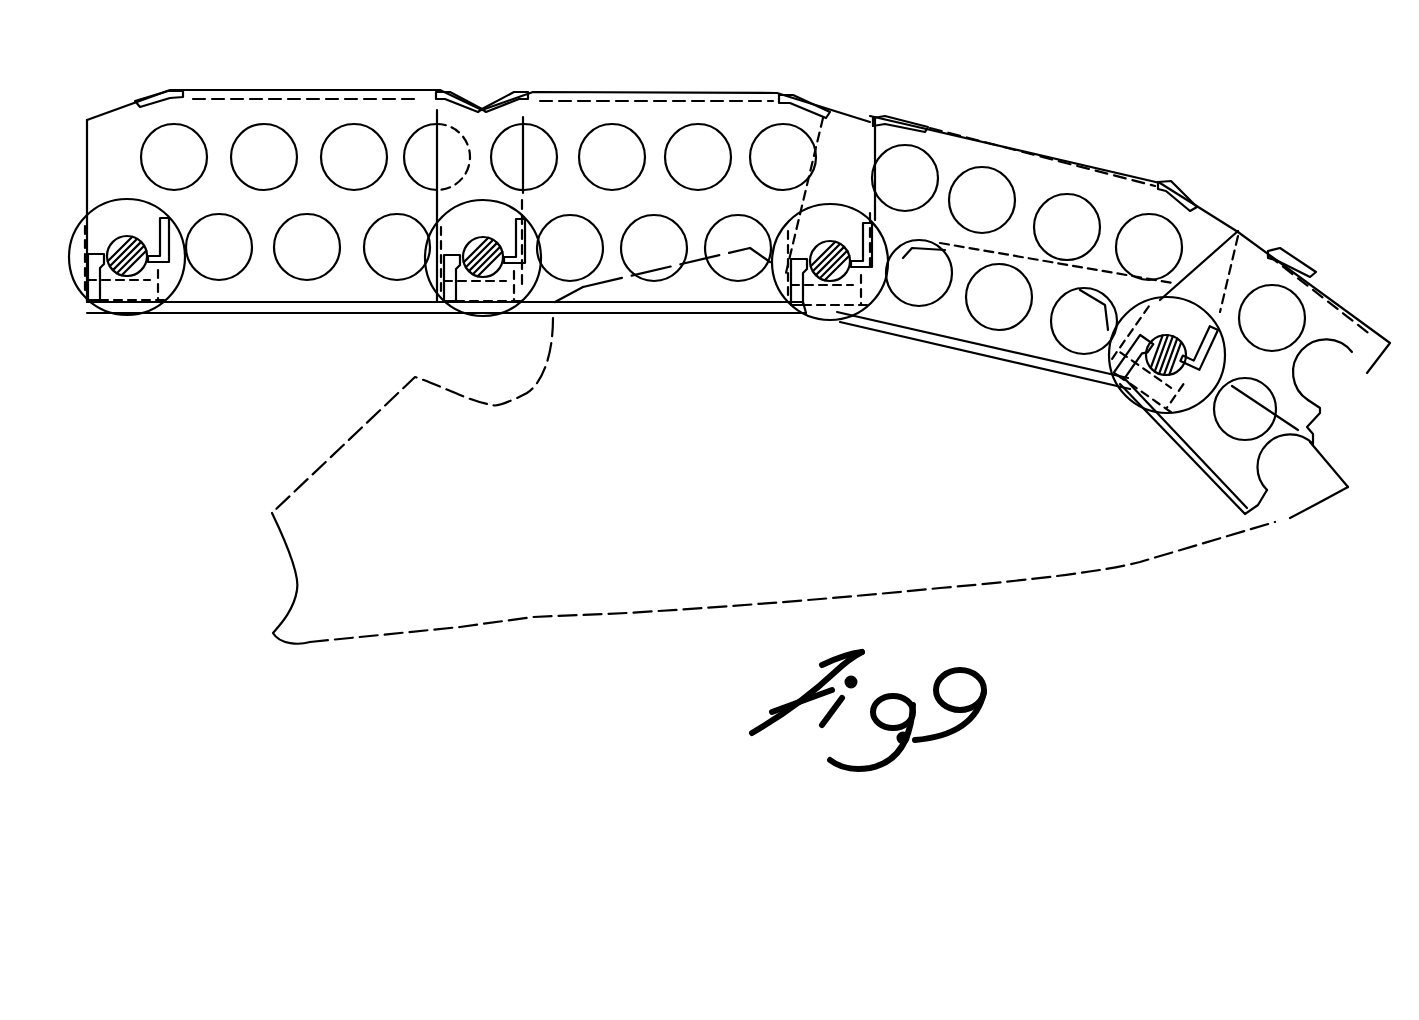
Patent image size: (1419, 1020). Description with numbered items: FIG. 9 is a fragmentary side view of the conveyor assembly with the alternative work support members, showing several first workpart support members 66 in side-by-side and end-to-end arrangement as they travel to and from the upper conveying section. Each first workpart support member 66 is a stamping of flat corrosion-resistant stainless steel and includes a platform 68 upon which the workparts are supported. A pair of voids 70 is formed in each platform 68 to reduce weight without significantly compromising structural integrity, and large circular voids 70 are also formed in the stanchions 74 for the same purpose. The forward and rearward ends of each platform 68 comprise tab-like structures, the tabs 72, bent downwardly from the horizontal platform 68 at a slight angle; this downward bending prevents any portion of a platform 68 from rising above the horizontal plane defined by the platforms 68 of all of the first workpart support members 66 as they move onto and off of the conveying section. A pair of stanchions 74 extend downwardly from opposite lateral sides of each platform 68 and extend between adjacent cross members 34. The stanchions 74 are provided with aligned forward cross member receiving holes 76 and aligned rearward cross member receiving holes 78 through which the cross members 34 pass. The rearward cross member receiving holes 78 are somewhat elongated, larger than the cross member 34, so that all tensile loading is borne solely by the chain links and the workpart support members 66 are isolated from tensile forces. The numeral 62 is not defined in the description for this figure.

The cross member 34 is at (115, 246).
The socket 62 is at (92, 288).
The first workpart support member 66 is at (349, 90).
The platform 68 is at (324, 90).
The voids 70 is at (190, 134).
The tabs 72 is at (153, 92).
The stanchions 74 is at (220, 303).
The forward cross member receiving holes 76 is at (132, 276).
The rearward cross member receiving holes 78 is at (155, 270).